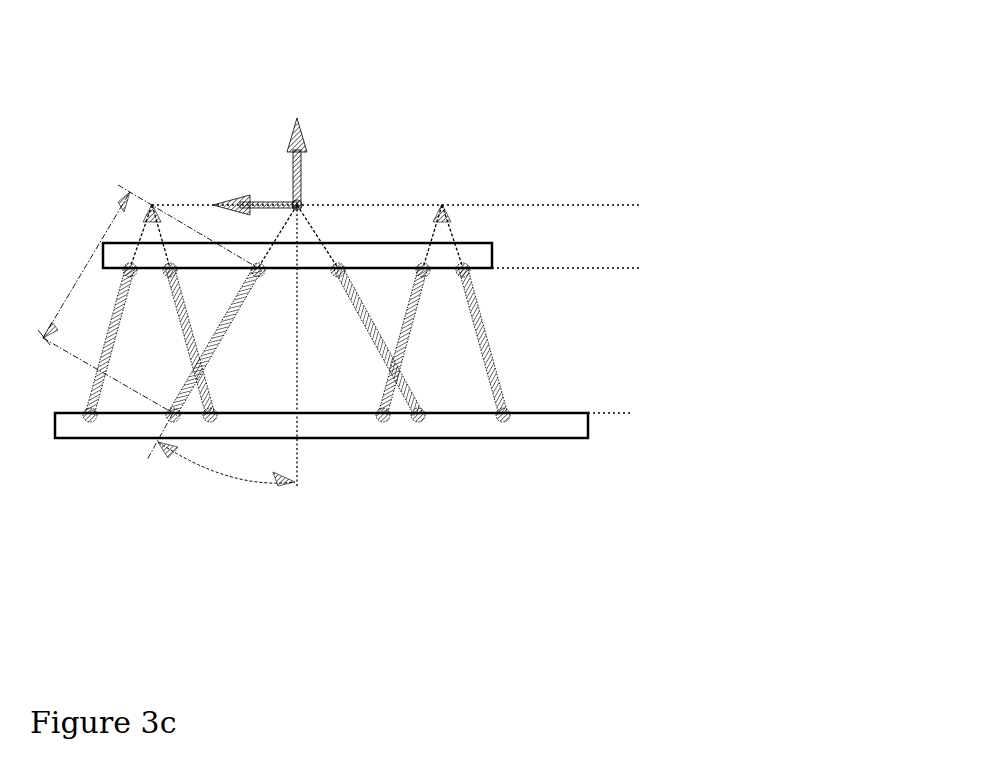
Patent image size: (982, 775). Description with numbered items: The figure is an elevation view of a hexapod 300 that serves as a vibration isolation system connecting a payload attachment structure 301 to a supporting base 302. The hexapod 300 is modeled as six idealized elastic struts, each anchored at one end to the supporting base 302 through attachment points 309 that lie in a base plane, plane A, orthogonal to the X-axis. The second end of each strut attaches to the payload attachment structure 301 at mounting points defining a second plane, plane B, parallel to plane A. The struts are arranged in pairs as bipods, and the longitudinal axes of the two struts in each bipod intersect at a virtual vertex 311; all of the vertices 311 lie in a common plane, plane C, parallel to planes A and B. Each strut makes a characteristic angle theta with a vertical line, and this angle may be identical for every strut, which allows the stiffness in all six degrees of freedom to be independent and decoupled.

The hexapod 300 is at (684, 180).
The payload attachment structure 301 is at (368, 257).
The supporting base 302 is at (102, 437).
The attachment points 309 is at (383, 415).
The vertex 311 is at (152, 205).